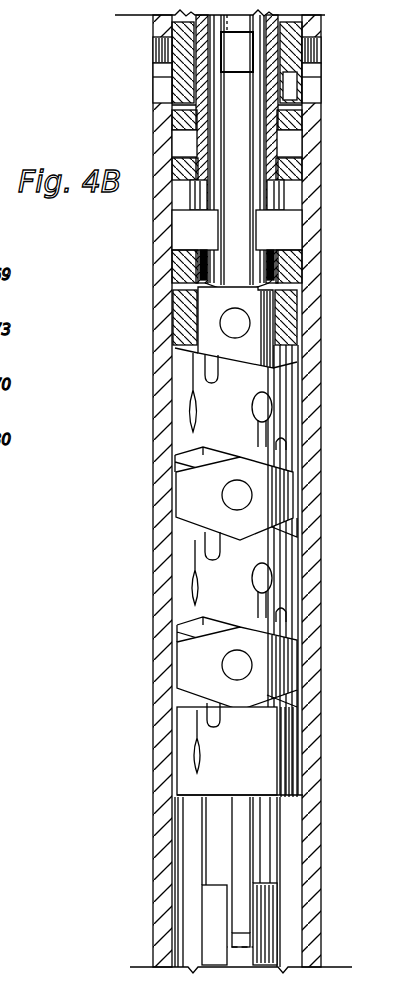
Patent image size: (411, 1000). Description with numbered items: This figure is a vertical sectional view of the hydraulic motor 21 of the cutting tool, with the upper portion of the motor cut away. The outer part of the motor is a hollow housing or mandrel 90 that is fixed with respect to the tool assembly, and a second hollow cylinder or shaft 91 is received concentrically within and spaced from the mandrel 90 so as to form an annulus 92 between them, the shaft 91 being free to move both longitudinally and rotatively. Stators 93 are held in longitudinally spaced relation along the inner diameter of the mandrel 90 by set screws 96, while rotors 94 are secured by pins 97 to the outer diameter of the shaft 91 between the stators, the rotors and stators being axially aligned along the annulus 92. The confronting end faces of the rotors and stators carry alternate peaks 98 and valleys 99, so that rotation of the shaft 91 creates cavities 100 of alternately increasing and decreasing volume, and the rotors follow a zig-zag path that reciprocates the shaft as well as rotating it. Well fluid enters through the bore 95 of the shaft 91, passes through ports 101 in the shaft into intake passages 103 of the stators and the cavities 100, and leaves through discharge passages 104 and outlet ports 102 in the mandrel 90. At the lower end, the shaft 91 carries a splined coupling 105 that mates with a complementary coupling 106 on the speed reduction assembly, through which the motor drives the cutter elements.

The motor 21 is at (319, 387).
The mandrel 90 is at (318, 257).
The shaft 91 is at (282, 202).
The annulus 92 is at (176, 106).
The stators 93 is at (200, 444).
The rotors 94 is at (288, 498).
The bore 95 is at (262, 90).
The set screws 96 is at (318, 47).
The pins 97 is at (183, 142).
The peaks 98 is at (174, 342).
The valleys 99 is at (304, 377).
The cavities 100 is at (181, 641).
The ports 101 is at (197, 228).
The ports 102 is at (158, 79).
The passages 103 is at (291, 190).
The passages 104 is at (291, 78).
The splined coupling 105 is at (271, 820).
The coupling 106 is at (274, 907).